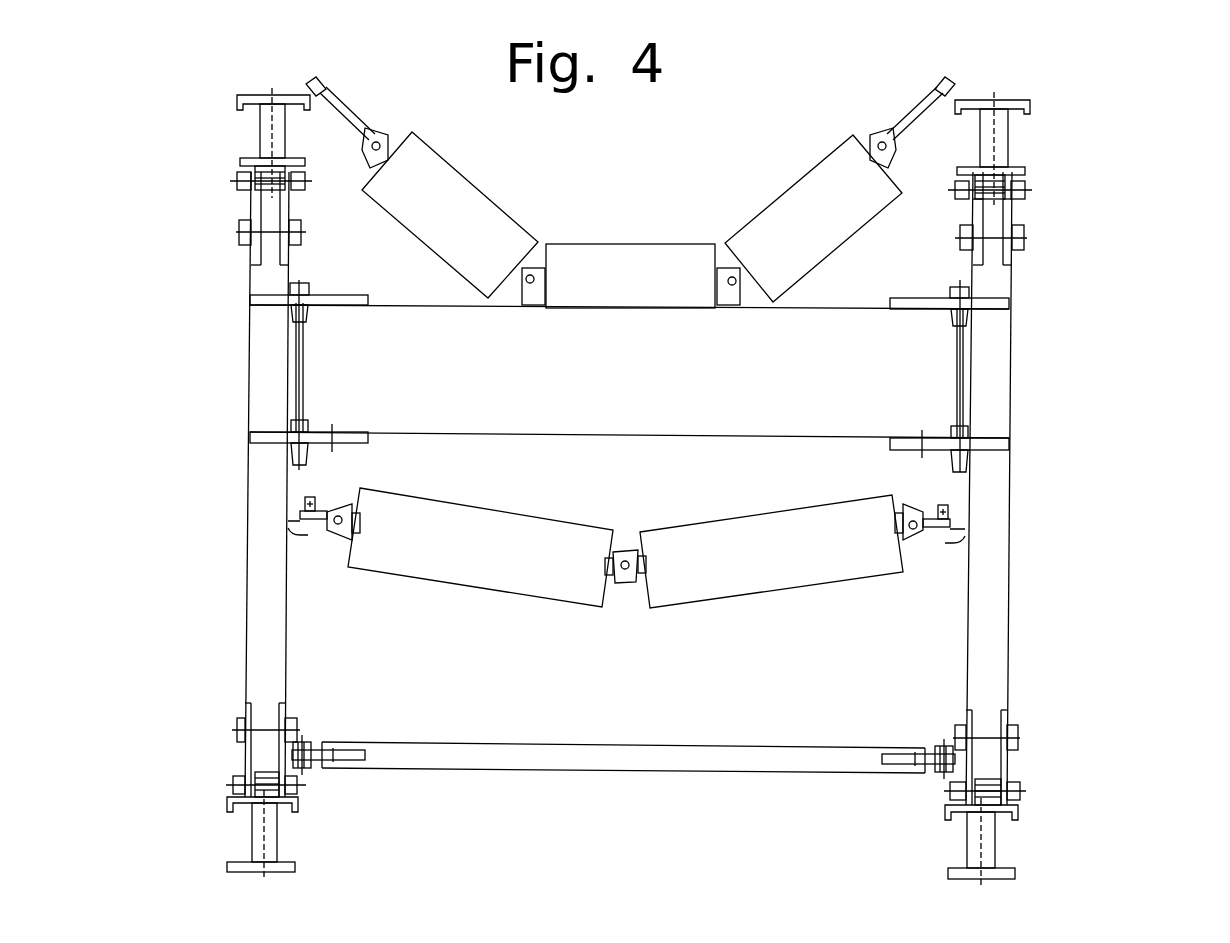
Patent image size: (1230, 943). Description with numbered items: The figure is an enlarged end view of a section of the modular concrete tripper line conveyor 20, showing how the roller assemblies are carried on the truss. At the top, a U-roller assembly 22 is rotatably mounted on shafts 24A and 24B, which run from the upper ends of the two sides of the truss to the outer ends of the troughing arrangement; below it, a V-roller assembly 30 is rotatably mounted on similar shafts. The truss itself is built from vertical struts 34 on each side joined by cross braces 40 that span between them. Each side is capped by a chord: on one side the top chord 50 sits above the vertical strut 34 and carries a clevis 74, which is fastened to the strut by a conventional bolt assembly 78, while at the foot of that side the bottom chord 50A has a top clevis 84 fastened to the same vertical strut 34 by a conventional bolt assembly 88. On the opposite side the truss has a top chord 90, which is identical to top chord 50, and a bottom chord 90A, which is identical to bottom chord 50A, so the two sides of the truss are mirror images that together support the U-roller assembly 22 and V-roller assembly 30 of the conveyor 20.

The modular concrete tripper line conveyor 20 is at (1018, 298).
The U-roller assembly 22 is at (808, 163).
The shaft 24A is at (332, 98).
The shaft 24B is at (950, 95).
The V-roller assembly 30 is at (585, 605).
The vertical strut 34 is at (246, 574).
The cross brace 40 is at (588, 770).
The top chord 50 is at (1035, 113).
The bottom chord 50A is at (1022, 812).
The clevis 74 is at (1018, 197).
The bolt assembly 78 is at (1025, 182).
The top clevis 84 is at (1018, 788).
The bolt assembly 88 is at (1015, 791).
The top chord 90 is at (258, 128).
The bottom chord 90A is at (248, 835).